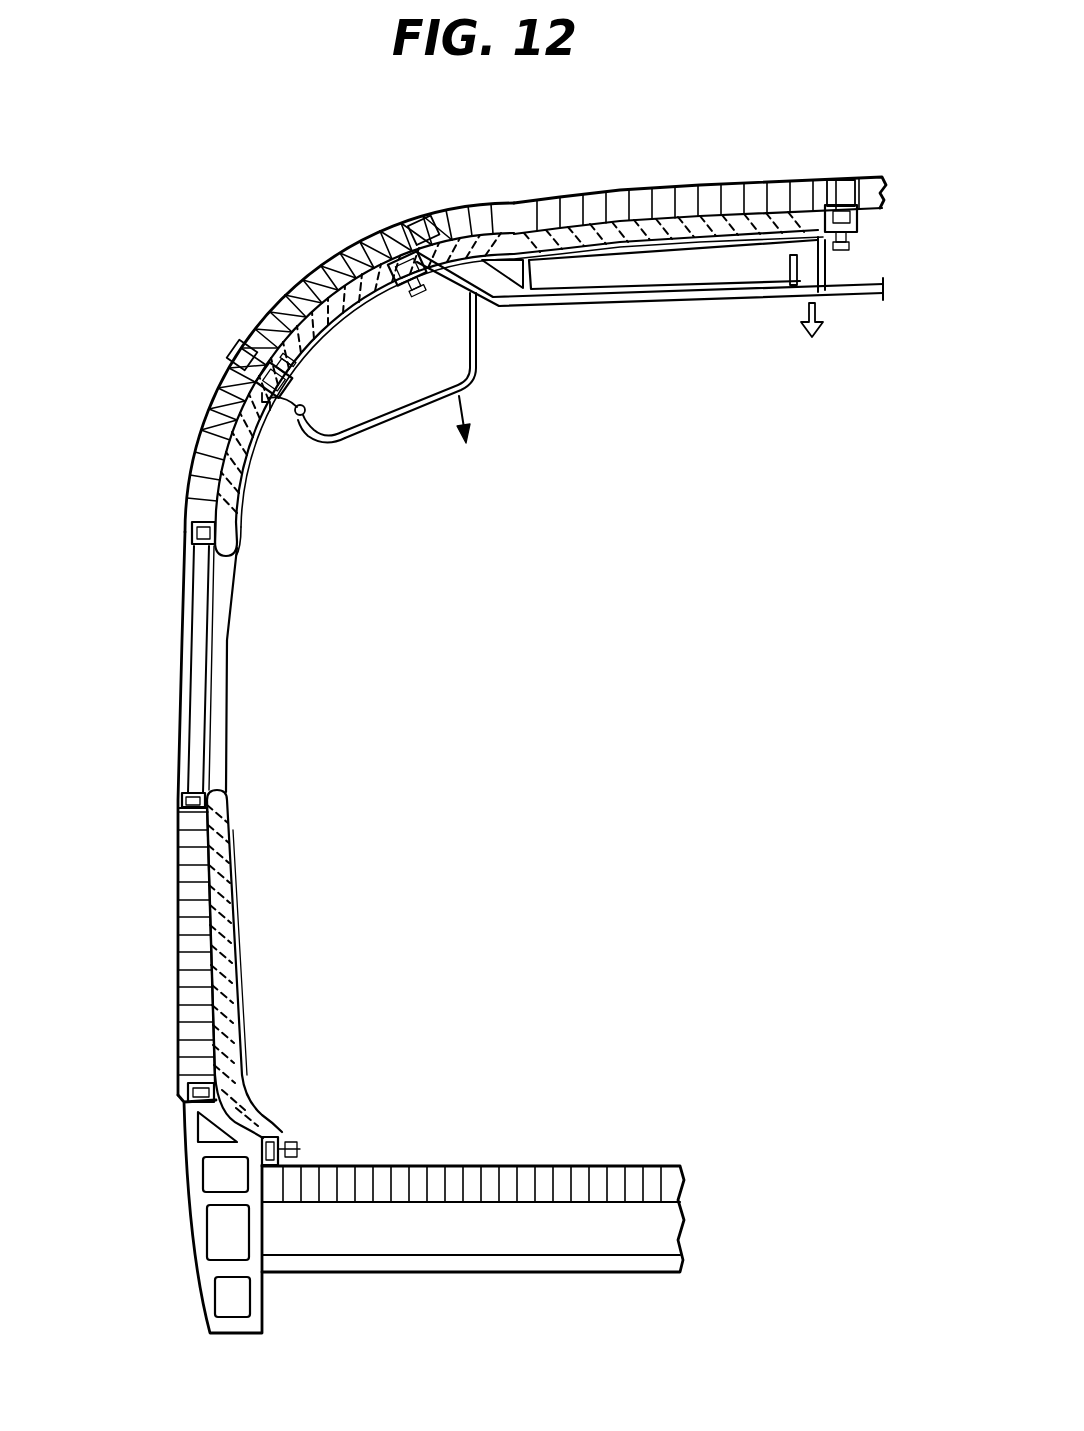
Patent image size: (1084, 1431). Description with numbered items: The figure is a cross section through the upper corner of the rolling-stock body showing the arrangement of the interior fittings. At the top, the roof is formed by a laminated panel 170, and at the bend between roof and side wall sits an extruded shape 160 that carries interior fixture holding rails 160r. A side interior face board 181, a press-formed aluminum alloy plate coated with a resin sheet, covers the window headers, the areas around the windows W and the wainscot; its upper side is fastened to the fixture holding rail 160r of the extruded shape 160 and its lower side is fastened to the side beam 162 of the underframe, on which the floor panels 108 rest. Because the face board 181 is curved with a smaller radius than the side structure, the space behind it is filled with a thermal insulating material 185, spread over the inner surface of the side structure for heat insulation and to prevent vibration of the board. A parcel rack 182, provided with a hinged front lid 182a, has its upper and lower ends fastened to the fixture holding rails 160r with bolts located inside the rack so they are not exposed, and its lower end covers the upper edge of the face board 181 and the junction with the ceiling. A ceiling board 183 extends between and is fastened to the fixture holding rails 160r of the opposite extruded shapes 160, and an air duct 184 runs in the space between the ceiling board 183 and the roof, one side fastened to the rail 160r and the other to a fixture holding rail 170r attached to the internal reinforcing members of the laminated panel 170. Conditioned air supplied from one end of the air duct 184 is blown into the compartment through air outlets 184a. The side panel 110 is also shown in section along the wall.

The extruded shape 160 is at (292, 290).
The fixture holding rail 160r is at (405, 250).
The laminated panel 170 is at (748, 182).
The fixture holding rail 170r is at (858, 239).
The side interior face board 181 is at (233, 630).
The parcel rack 182 is at (474, 370).
The hinged front lid 182a is at (375, 436).
The ceiling board 183 is at (603, 306).
The air duct 184 is at (713, 290).
The air outlet 184a is at (818, 300).
The thermal insulating material 185 is at (240, 505).
The side panel 110 is at (203, 521).
The floor panel 108 is at (565, 1166).
The side beam 162 is at (190, 1225).
The window W is at (178, 667).